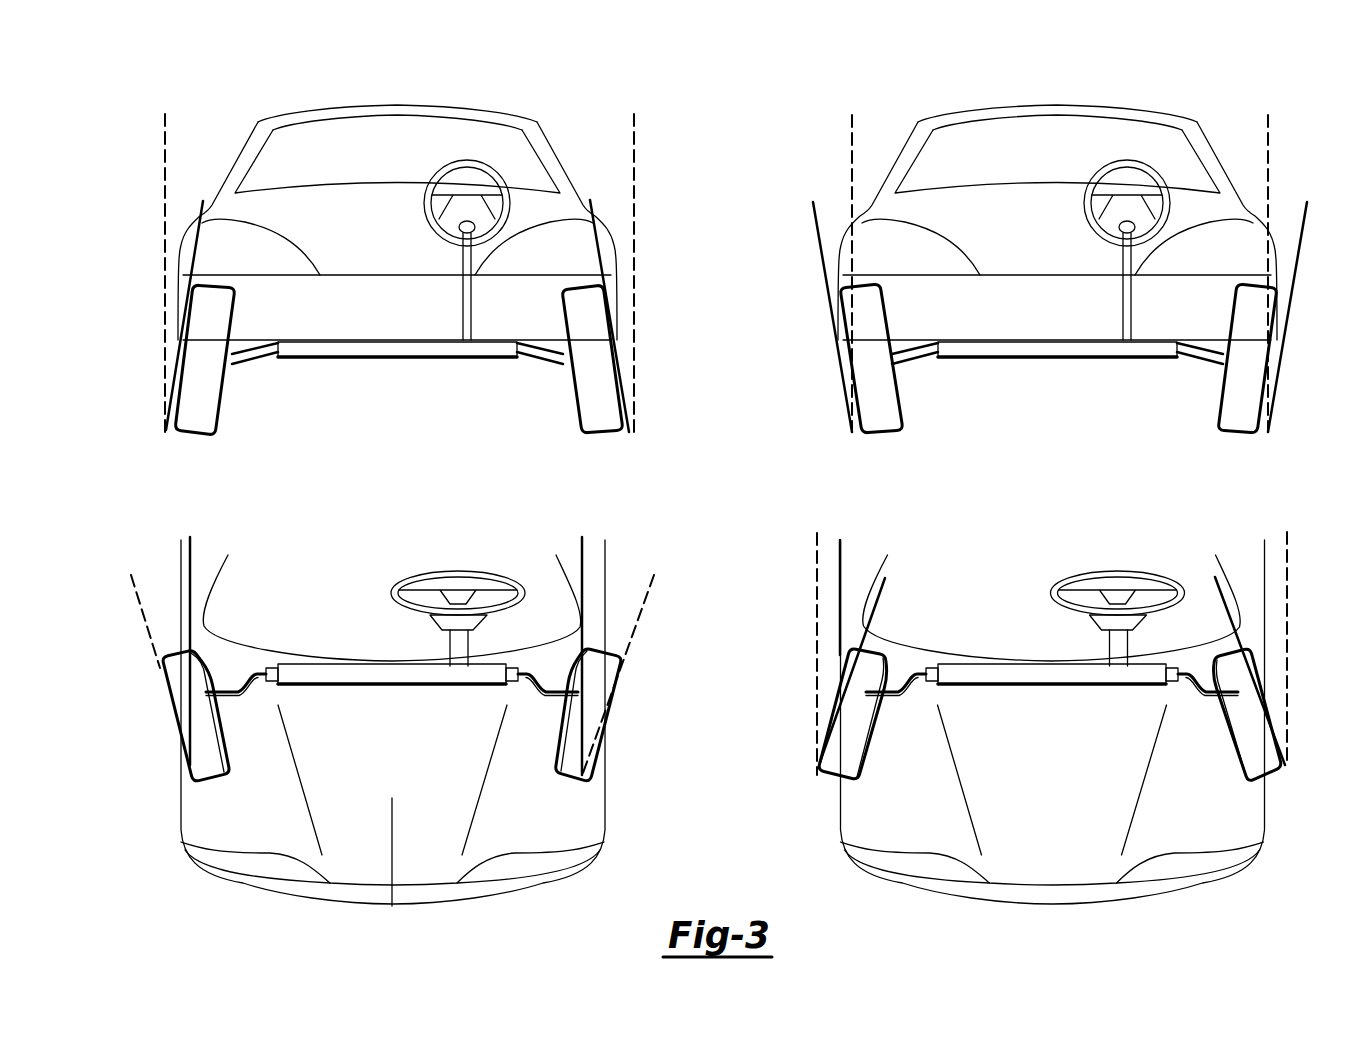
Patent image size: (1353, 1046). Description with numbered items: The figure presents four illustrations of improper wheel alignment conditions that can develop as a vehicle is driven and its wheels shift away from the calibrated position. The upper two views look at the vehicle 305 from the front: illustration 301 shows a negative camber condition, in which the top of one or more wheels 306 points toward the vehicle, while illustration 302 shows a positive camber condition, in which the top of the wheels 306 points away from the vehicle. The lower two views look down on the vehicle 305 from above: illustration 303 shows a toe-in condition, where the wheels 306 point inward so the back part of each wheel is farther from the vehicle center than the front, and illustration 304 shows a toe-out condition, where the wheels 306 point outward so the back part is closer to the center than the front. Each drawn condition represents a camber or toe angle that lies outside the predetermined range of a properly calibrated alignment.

The illustration of negative camber condition 301 is at (237, 93).
The illustration of positive camber condition 302 is at (900, 95).
The illustration of toe-in condition 303 is at (239, 505).
The illustration of toe-out condition 304 is at (902, 503).
The vehicle 305 is at (399, 104).
The wheels 306 is at (227, 406).